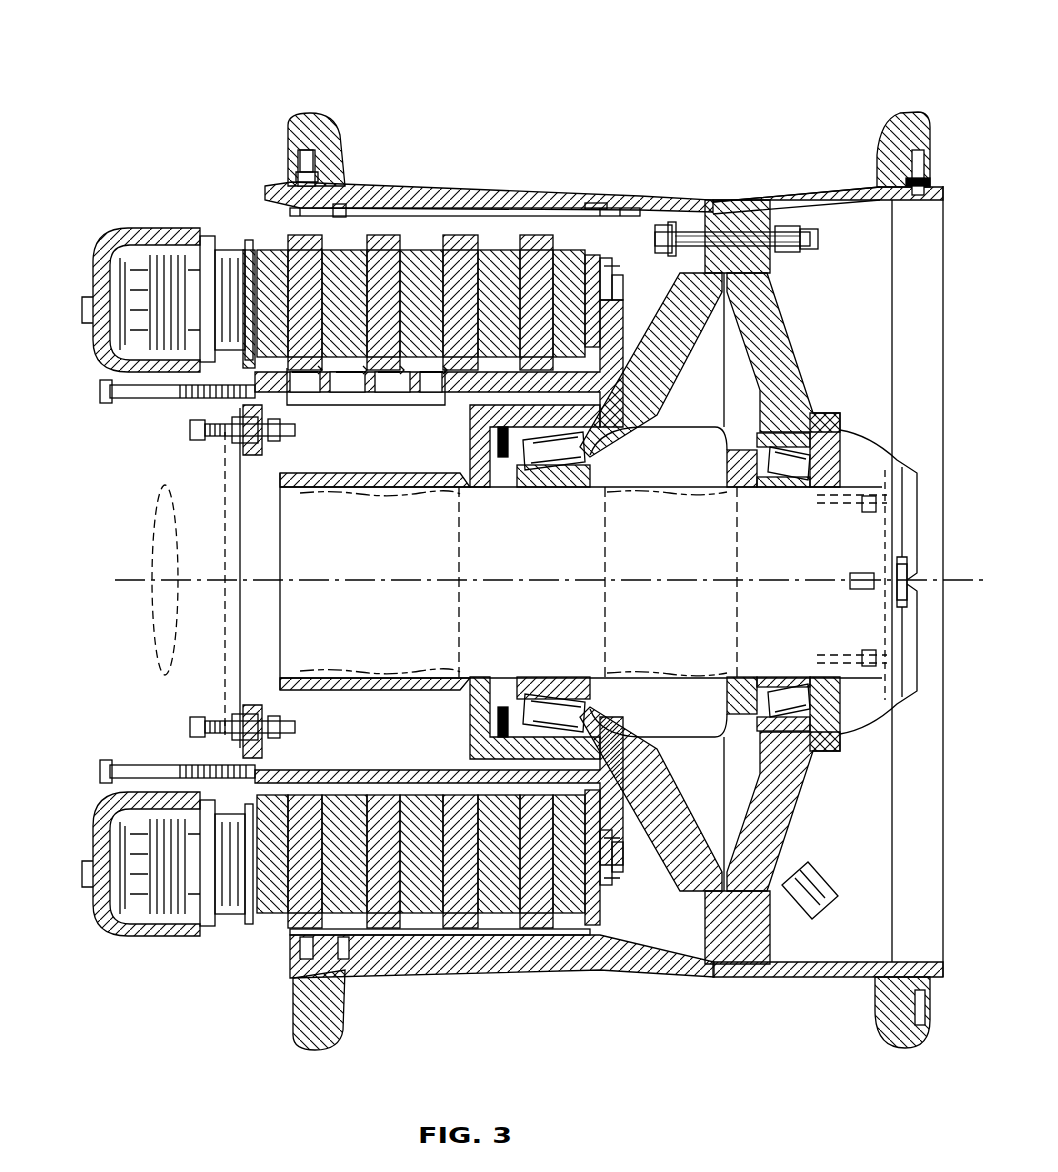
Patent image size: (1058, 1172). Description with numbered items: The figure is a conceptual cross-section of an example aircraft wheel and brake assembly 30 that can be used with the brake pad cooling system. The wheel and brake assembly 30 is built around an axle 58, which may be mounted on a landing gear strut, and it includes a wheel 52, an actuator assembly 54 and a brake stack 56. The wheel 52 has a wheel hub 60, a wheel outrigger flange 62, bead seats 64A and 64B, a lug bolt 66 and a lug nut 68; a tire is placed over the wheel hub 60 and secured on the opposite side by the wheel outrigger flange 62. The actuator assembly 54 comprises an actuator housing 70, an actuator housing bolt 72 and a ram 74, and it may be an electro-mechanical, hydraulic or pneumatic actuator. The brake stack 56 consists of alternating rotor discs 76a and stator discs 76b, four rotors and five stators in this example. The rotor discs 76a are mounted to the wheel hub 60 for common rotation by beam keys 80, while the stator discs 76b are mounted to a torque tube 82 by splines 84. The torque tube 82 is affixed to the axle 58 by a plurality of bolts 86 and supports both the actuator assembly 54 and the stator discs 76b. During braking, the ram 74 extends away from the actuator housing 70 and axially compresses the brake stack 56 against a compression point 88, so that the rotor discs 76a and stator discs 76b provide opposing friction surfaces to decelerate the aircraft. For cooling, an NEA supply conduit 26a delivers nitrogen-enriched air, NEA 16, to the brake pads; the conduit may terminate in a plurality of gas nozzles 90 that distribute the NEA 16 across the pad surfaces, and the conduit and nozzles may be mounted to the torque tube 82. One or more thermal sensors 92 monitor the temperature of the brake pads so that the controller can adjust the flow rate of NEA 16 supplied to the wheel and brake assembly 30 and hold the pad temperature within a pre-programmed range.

The wheel and brake assembly 30 is at (737, 62).
The wheel 52 is at (662, 160).
The actuator assembly 54 is at (98, 226).
The brake stack 56 is at (245, 952).
The axle 58 is at (547, 550).
The wheel hub 60 is at (512, 193).
The wheel outrigger flange 62 is at (792, 192).
The bead seat 64A is at (880, 143).
The bead seat 64B is at (343, 148).
The lug bolt 66 is at (736, 232).
The lug nut 68 is at (820, 243).
The actuator housing 70 is at (69, 321).
The actuator housing bolt 72 is at (120, 398).
The ram 74 is at (252, 265).
The rotor discs 76a is at (385, 912).
The stator discs 76b is at (435, 905).
The beam keys 80 is at (568, 925).
The torque tube 82 is at (468, 395).
The splines 84 is at (383, 771).
The bolts 86 is at (205, 727).
The compression point 88 is at (604, 262).
The gas nozzles 90 is at (300, 372).
The thermal sensors 92 is at (346, 205).
The NEA 16 is at (303, 380).
The NEA supply conduit 26a is at (345, 402).